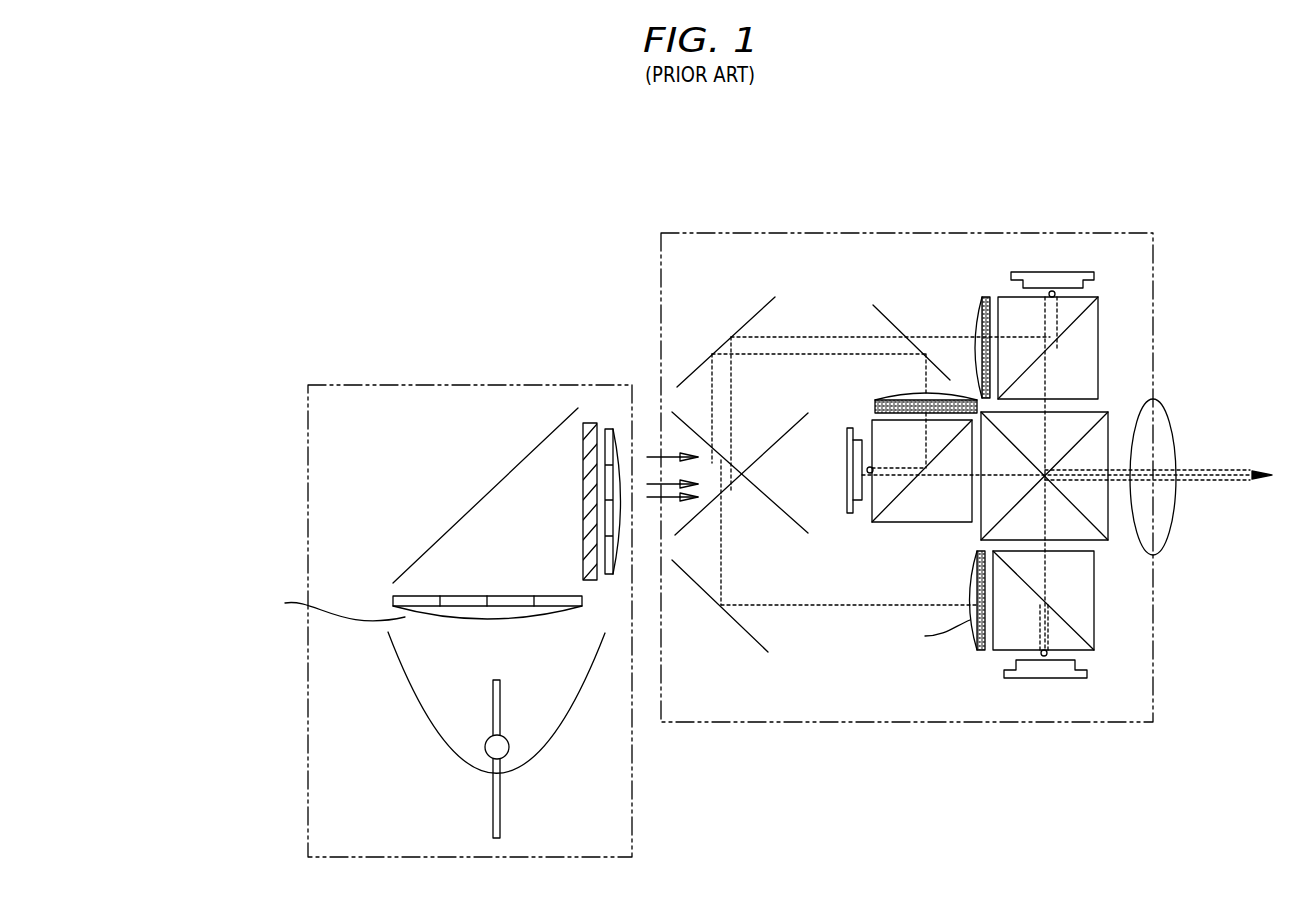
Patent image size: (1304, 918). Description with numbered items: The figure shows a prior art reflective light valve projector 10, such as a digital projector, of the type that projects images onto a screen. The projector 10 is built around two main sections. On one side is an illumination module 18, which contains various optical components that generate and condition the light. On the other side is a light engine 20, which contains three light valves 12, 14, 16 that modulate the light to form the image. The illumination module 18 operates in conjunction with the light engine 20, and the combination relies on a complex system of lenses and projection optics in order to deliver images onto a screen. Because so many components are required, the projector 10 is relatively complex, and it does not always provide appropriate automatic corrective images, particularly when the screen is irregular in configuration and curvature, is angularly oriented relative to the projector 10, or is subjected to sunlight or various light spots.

The reflective light valve projector 10 is at (747, 198).
The light valve 12 is at (1083, 272).
The light valve 14 is at (848, 503).
The light valve 16 is at (1010, 676).
The illumination module 18 is at (418, 384).
The light engine 20 is at (820, 232).